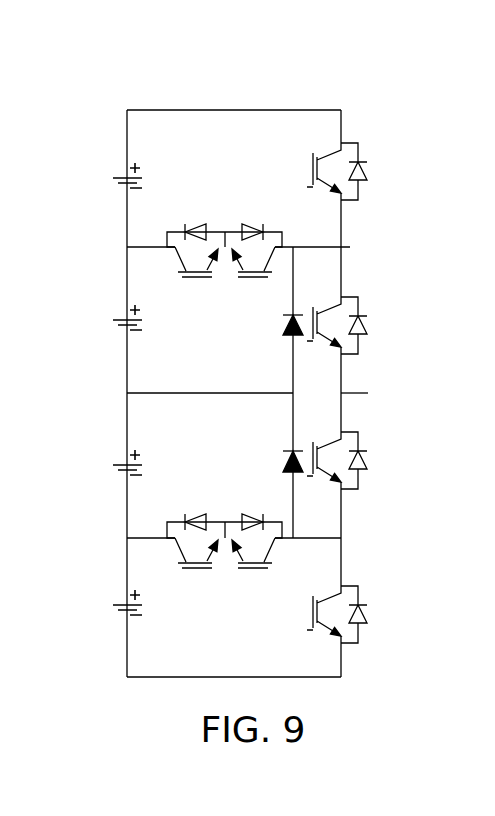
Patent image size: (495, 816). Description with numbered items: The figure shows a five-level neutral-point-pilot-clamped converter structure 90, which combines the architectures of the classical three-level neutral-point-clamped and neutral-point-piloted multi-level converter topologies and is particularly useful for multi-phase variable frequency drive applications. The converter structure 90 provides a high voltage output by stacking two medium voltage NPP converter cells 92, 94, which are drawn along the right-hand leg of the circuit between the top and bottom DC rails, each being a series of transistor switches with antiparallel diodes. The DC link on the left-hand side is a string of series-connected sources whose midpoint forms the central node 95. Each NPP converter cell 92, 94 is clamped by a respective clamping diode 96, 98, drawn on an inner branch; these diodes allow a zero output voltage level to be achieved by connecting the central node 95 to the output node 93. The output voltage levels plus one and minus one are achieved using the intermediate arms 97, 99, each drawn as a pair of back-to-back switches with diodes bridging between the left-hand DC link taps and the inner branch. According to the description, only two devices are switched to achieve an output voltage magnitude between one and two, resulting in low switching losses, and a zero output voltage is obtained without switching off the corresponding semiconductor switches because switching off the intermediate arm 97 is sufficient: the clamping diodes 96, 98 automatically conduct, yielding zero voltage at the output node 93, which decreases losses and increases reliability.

The five-level neutral-point-pilot-clamped converter structure 90 is at (320, 78).
The NPP converter cell 92 is at (370, 250).
The output node 93 is at (396, 396).
The NPP converter cell 94 is at (370, 540).
The central node 95 is at (96, 405).
The clamping diode 96 is at (282, 328).
The intermediate arm 97 is at (225, 212).
The clamping diode 98 is at (282, 463).
The intermediate arm 99 is at (226, 577).